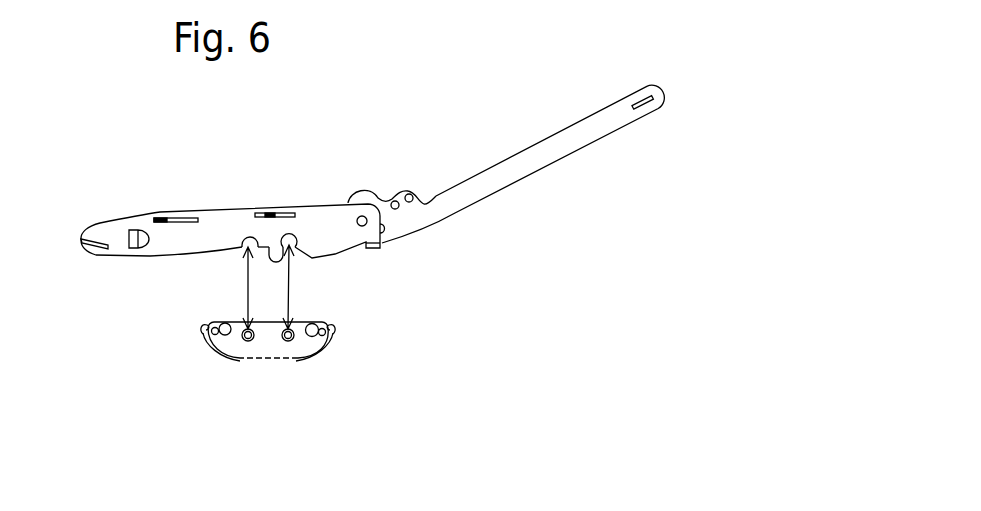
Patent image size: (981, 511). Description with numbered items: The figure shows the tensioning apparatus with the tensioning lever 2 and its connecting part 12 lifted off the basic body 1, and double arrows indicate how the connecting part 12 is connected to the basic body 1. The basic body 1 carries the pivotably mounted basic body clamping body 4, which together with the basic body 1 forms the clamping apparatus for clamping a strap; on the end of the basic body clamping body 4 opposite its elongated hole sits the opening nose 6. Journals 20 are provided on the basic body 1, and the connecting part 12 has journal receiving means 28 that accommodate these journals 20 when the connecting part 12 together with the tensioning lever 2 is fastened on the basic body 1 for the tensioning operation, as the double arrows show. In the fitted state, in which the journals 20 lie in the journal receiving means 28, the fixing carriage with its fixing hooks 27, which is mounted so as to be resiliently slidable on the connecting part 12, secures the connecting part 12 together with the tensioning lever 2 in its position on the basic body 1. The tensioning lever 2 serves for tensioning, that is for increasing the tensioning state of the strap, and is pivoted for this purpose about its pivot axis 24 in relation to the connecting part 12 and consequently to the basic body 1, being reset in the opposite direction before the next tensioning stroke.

The basic body 1 is at (274, 355).
The tensioning lever 2 is at (553, 150).
The basic body clamping body 4 is at (212, 345).
The opening nose 6 is at (200, 328).
The connecting part 12 is at (217, 220).
The journal 20 is at (245, 340).
The pivot axis 24 is at (364, 216).
The fixing hook 27 is at (274, 250).
The journal receiving means 28 is at (291, 236).